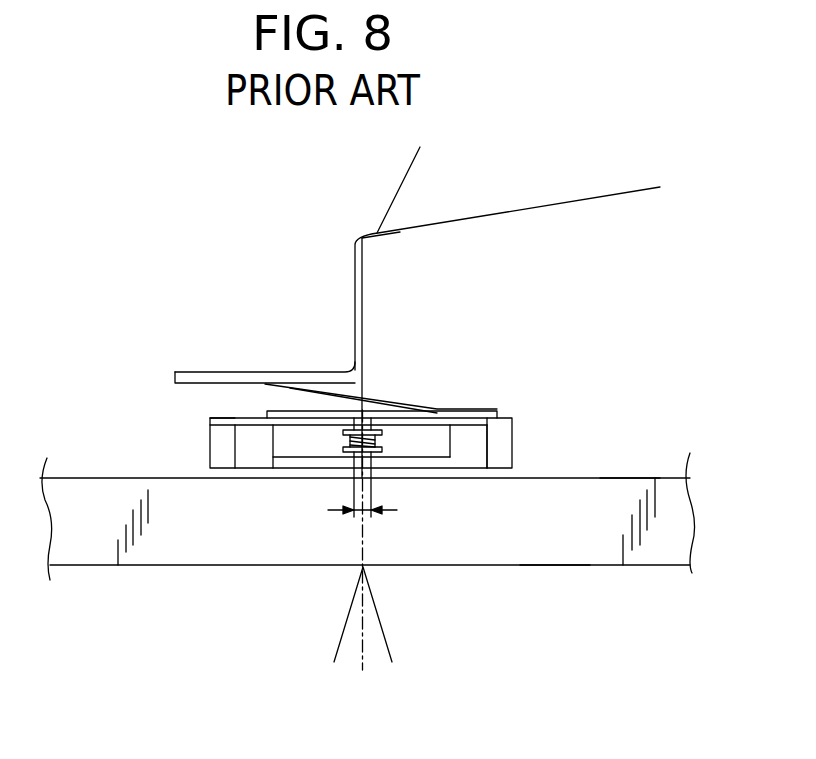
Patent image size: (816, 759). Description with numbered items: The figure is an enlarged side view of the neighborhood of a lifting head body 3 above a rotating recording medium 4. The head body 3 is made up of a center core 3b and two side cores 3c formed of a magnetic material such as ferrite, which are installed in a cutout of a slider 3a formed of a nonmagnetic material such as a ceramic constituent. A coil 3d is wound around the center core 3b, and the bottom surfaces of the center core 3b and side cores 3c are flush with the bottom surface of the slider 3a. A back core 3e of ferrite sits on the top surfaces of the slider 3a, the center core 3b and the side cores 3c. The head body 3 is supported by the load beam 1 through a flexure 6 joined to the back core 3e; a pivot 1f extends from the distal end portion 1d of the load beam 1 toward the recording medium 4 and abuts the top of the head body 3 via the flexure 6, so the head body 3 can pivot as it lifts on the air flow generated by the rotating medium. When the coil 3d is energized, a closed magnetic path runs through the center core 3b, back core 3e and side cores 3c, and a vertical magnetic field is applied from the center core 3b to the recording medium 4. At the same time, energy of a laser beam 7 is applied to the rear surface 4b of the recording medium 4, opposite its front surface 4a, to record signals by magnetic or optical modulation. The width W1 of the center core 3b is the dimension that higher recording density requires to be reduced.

The load beam 1 is at (518, 187).
The distal end portion 1d is at (243, 373).
The pivot 1f is at (362, 384).
The flexure 6 is at (420, 402).
The head body 3 is at (513, 432).
The slider 3a is at (297, 460).
The center core 3b is at (353, 460).
The side cores 3c is at (248, 460).
The coil 3d is at (382, 438).
The back core 3e is at (222, 420).
The recording medium 4 is at (608, 532).
The front surface 4a is at (623, 478).
The rear surface 4b is at (552, 566).
The width of the center core W1 is at (367, 517).
The laser beam 7 is at (372, 633).